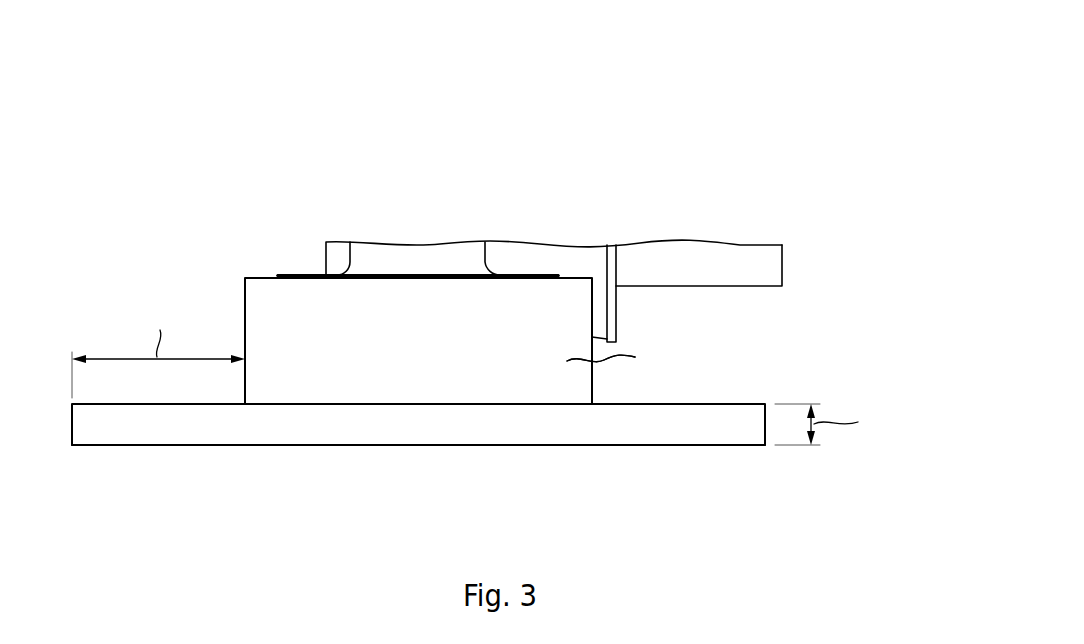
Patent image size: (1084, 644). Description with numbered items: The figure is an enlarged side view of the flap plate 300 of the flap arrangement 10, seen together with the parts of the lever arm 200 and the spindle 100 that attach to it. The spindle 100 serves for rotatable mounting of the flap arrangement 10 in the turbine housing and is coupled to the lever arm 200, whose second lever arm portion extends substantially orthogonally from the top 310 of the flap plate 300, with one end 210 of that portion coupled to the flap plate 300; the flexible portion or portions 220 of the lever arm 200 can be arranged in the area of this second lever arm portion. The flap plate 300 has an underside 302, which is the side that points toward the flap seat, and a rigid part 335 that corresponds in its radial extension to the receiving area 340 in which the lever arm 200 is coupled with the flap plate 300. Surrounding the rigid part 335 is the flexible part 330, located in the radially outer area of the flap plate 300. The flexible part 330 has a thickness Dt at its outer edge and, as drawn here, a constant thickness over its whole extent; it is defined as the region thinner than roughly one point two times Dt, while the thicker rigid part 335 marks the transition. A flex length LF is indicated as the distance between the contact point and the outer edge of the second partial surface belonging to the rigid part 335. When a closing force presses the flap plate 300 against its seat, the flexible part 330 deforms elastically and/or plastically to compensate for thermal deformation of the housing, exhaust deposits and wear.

The flap arrangement 10 is at (493, 289).
The spindle 100 is at (693, 258).
The lever arm 200 is at (530, 224).
The end of the second lever arm portion 210 is at (498, 268).
The flexible portion of the lever arm 220 is at (415, 253).
The flap plate 300 is at (493, 362).
The underside 302 is at (258, 446).
The top of the flap plate 310 is at (257, 276).
The flexible part 330 is at (712, 430).
The rigid part 335 is at (644, 357).
The receiving area 340 is at (601, 358).